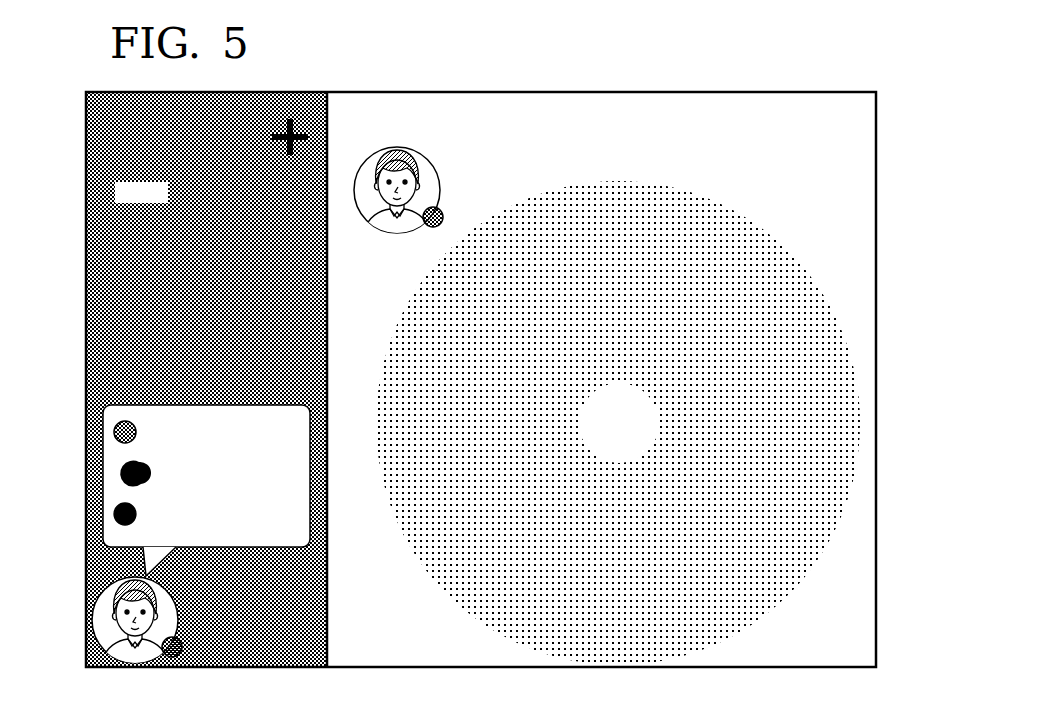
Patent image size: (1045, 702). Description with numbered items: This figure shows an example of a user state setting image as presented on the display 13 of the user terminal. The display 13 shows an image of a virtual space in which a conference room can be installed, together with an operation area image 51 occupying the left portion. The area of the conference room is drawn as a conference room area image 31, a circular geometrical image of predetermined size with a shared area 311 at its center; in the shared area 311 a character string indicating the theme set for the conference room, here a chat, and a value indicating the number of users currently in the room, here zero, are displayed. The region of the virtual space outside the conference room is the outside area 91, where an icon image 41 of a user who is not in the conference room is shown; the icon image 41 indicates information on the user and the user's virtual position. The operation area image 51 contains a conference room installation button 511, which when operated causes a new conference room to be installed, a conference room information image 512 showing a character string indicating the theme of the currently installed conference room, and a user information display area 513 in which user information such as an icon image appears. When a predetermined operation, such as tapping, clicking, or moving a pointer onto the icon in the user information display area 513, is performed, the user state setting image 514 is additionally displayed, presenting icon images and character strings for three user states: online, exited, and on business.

The display 13 is at (900, 151).
The operation area image 51 is at (86, 378).
The conference room installation button 511 is at (304, 133).
The conference room information image 512 is at (116, 190).
The user information display area 513 is at (92, 618).
The user state setting image 514 is at (103, 475).
The icon image 41 is at (428, 161).
The conference room area image 31 is at (731, 217).
The shared area 311 is at (583, 452).
The outside area 91 is at (612, 387).